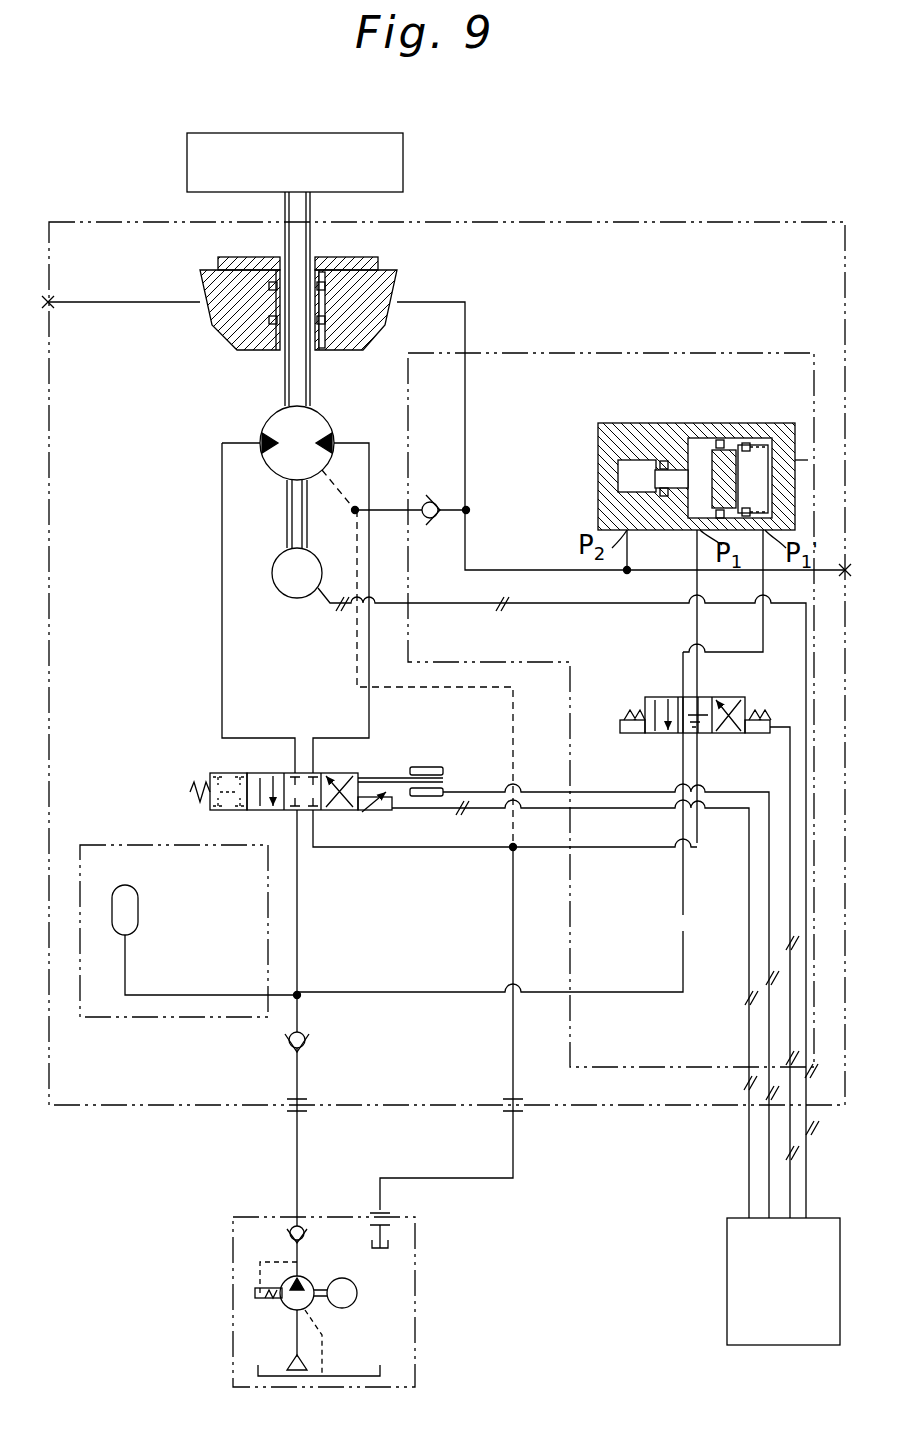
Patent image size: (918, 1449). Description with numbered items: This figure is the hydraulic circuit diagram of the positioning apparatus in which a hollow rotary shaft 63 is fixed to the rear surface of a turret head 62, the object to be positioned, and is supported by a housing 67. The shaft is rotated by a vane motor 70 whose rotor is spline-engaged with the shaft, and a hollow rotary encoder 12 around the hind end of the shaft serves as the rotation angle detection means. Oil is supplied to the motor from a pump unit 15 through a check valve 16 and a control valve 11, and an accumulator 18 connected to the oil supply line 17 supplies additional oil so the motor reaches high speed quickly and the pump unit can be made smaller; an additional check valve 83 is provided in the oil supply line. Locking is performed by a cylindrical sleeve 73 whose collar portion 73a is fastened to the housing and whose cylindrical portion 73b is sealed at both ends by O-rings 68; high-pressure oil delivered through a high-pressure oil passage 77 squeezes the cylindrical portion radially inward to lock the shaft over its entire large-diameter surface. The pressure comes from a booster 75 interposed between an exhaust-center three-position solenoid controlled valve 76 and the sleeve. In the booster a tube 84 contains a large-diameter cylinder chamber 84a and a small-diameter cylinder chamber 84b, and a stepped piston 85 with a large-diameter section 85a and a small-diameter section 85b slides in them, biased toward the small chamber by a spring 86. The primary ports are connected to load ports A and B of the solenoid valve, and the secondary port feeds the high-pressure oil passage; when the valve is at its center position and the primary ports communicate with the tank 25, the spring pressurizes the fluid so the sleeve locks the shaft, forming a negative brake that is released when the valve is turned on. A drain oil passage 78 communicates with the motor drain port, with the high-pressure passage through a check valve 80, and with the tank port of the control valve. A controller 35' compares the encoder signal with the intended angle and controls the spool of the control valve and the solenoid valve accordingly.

In FIG. 9, the turret head 62 is at (395, 148).
In FIG. 9, the hollow rotary shaft 63 is at (283, 388).
In FIG. 9, the housing 67 is at (398, 290).
In FIG. 9, the O-rings 68 is at (322, 283).
In FIG. 9, the vane motor 70 is at (330, 420).
In FIG. 9, the cylindrical sleeve 73 is at (368, 252).
In FIG. 9, the collar portion 73a is at (262, 268).
In FIG. 9, the cylindrical portion 73b is at (265, 300).
In FIG. 9, the booster 75 is at (655, 388).
In FIG. 9, the solenoid controlled valve 76 is at (650, 690).
In FIG. 9, the high-pressure oil passage 77 is at (362, 312).
The drain oil passage 78 is at (513, 935).
In FIG. 9, the check valve 80 is at (430, 500).
The check valve 83 is at (305, 1046).
In FIG. 9, the tube 84 is at (683, 465).
In FIG. 9, the large-diameter cylinder chamber 84a is at (705, 445).
In FIG. 9, the small-diameter cylinder chamber 84b is at (622, 440).
In FIG. 9, the stepped piston 85 is at (688, 500).
In FIG. 9, the large-diameter section 85a is at (735, 448).
In FIG. 9, the small-diameter section 85b is at (660, 460).
In FIG. 9, the spring 86 is at (795, 460).
The control valve 11 is at (212, 768).
In FIG. 9, the rotary encoder 12 is at (281, 597).
The pump unit 15 is at (353, 1279).
The check valve 16 is at (284, 1240).
The oil supply line 17 is at (298, 1146).
The accumulator 18 is at (140, 910).
The tank 25 is at (390, 1246).
The controller 35' is at (742, 1281).